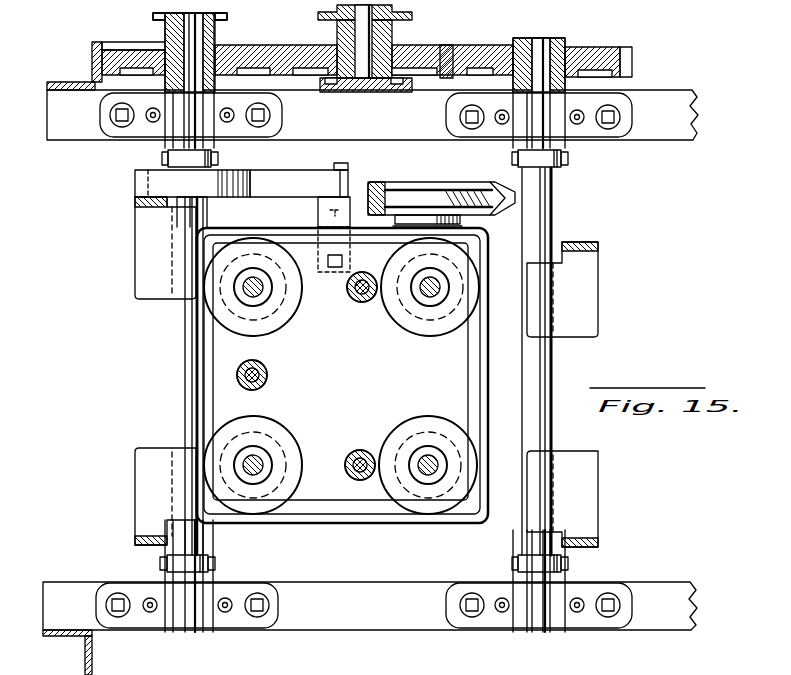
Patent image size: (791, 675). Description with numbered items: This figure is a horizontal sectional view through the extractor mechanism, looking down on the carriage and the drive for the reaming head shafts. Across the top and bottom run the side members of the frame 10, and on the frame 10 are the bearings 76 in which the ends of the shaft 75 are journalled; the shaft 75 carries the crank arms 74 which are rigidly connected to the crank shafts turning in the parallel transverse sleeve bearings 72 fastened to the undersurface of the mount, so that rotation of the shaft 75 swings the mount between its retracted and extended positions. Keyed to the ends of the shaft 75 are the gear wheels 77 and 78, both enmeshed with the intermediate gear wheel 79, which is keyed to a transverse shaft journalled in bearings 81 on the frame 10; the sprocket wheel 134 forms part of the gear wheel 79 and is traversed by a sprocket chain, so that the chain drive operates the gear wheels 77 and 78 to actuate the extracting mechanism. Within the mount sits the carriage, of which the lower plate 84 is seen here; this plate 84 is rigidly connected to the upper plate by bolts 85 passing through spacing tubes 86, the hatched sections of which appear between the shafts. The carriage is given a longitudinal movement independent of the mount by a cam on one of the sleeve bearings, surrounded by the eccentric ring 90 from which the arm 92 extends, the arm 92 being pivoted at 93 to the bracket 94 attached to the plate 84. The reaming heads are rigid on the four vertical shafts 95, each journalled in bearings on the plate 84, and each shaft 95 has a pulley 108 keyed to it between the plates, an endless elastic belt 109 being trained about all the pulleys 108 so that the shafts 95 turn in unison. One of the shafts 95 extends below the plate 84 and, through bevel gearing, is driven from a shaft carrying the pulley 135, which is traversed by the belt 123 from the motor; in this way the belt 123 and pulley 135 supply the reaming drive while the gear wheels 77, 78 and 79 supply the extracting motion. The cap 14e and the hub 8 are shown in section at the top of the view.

The center hub 8 is at (397, 47).
The frame 10 is at (52, 136).
The cap flange 14e is at (153, 17).
The sleeve bearings 72 is at (553, 222).
The crank arms 74 is at (162, 158).
The shaft 75 is at (205, 50).
The bearings 76 is at (105, 133).
The gear wheel 77 is at (600, 50).
The gear wheel 78 is at (127, 42).
The intermediate gear wheel 79 is at (303, 60).
The bearings 81 is at (382, 92).
The lower plate 84 is at (357, 526).
The bolts 85 is at (349, 287).
The spacing tubes 86 is at (361, 300).
The eccentric ring 90 is at (135, 180).
The arm 92 is at (286, 178).
The pivot 93 is at (342, 168).
The bracket 94 is at (318, 215).
The vertical shafts 95 is at (253, 291).
The pulley 108 is at (284, 312).
The endless belt 109 is at (467, 364).
The belt 123 is at (507, 202).
The sprocket wheel 134 is at (408, 12).
The pulley 135 is at (440, 182).